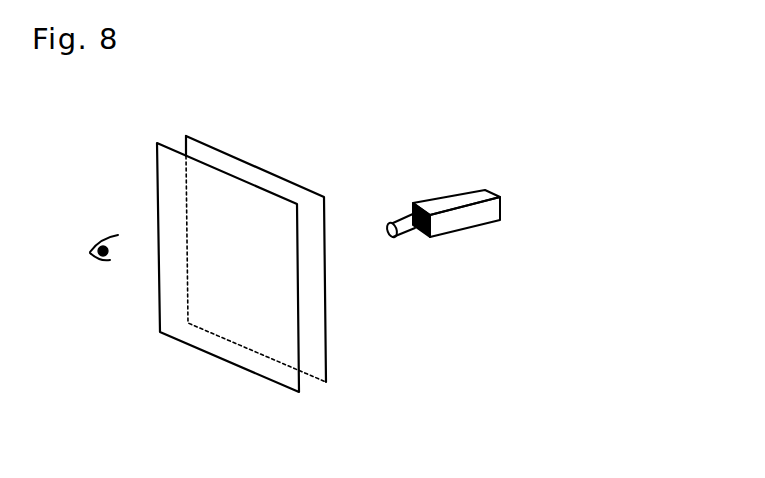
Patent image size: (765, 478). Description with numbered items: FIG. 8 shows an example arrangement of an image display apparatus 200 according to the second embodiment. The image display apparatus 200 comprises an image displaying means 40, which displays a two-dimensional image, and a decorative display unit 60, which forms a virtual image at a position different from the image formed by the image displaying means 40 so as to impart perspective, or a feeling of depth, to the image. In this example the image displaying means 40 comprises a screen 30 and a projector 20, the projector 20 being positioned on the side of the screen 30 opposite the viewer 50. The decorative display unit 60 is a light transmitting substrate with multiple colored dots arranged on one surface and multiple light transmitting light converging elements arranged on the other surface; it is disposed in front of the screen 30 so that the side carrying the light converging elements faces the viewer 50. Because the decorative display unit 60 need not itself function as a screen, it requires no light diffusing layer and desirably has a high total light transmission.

The image display apparatus 200 is at (346, 92).
The image displaying means 40 is at (423, 167).
The screen 30 is at (312, 228).
The decorative display unit 60 is at (205, 333).
The projector 20 is at (450, 235).
The viewer 50 is at (98, 270).